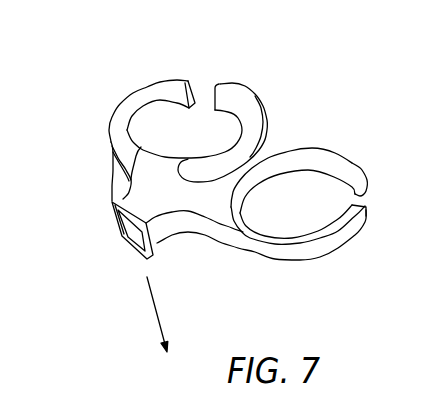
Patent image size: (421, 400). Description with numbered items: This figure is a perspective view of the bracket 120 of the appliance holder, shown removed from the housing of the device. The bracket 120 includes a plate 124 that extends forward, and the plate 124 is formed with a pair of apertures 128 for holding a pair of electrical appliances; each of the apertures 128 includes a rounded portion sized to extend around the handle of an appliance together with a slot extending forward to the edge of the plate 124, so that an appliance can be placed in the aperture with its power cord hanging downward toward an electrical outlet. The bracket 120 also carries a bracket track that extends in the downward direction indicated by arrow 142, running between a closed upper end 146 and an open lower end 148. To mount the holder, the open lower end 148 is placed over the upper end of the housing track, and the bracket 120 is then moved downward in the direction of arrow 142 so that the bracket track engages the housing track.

The bracket 120 is at (233, 266).
The plate 124 is at (318, 262).
The apertures 128 is at (213, 98).
The arrow 142 is at (157, 318).
The closed upper end 146 is at (122, 218).
The open lower end 148 is at (122, 235).